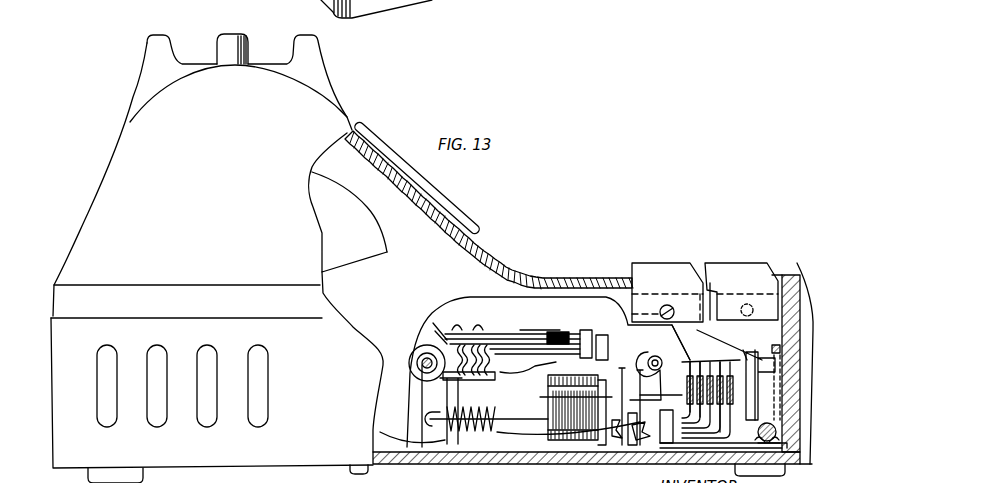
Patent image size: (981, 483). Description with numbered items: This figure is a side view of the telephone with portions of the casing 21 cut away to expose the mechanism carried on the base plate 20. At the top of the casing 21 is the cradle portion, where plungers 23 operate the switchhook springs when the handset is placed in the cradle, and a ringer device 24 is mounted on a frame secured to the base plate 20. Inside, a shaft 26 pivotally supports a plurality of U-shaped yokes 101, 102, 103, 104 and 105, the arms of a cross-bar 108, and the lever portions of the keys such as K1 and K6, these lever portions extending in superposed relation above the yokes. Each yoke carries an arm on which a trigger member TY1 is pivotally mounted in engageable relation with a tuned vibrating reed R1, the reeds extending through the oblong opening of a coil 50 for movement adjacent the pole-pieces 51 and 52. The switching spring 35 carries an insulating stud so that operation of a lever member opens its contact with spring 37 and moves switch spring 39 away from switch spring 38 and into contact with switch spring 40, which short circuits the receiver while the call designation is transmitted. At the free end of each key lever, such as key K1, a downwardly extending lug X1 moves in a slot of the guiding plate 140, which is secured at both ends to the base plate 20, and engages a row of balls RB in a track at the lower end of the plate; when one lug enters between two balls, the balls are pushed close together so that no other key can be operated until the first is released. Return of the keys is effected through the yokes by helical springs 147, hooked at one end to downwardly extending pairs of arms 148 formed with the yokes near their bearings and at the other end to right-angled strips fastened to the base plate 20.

The plungers 23 is at (222, 42).
The ringer device 24 is at (348, 202).
The spring 37 is at (513, 335).
The U-shaped yoke 104 is at (453, 322).
The U-shaped yoke 105 is at (437, 337).
The U-shaped yoke 103 is at (465, 338).
The U-shaped yoke 102 is at (488, 338).
The switch spring 38 is at (533, 334).
The cross-bar 108 is at (562, 332).
The switching spring 35 is at (592, 335).
The switch spring 39 is at (598, 362).
The shaft 26 is at (417, 360).
The U-shaped yoke 101 is at (490, 383).
The switch spring 40 is at (545, 372).
The pole-piece 51 is at (592, 380).
The reed R1 is at (617, 397).
The trigger member TY1 is at (648, 370).
The key K1 is at (660, 272).
The key K6 is at (720, 272).
The lug X1 is at (797, 266).
The balls RB is at (764, 426).
The guiding plate 140 is at (785, 455).
The arms 148 is at (428, 440).
The helical springs 147 is at (470, 440).
The base plate 20 is at (484, 458).
The coil 50 is at (572, 412).
The pole-piece 52 is at (600, 440).
The casing 21 is at (253, 460).